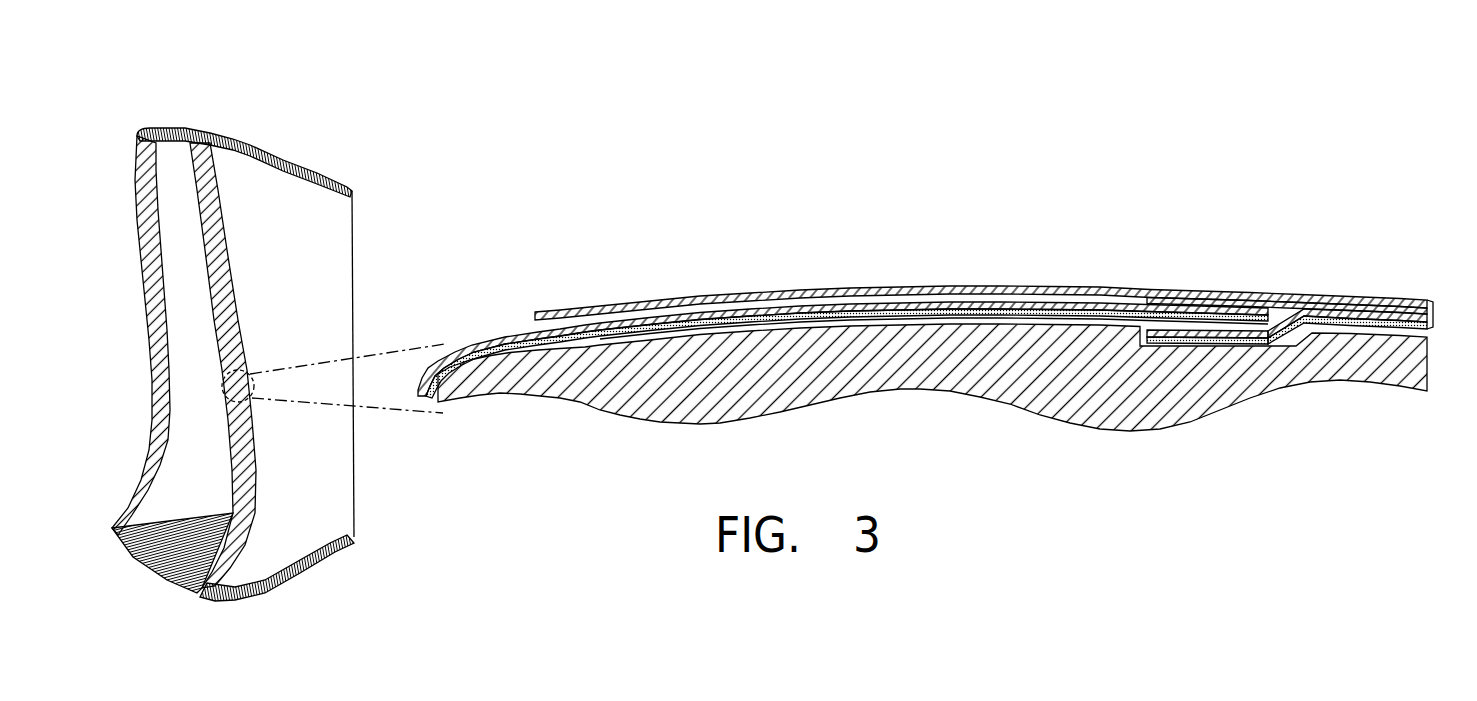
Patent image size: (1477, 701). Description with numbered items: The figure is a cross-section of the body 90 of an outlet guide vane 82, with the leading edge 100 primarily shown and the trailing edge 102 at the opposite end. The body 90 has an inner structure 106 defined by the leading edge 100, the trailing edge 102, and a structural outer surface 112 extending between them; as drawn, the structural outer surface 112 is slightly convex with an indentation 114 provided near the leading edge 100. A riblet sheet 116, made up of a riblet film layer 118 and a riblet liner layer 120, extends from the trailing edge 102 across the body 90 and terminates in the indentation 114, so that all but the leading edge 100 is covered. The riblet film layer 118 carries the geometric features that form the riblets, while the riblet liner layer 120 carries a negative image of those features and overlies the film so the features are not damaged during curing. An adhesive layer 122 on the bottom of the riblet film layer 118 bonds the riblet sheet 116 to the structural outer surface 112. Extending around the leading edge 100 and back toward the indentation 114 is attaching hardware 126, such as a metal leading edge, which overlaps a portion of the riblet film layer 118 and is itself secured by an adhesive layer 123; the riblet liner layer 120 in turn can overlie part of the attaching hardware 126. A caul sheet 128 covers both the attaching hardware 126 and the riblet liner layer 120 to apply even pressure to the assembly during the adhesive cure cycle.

The outlet guide vane 82 is at (206, 116).
The body 90 is at (940, 184).
The leading edge 100 is at (921, 361).
The trailing edge 102 is at (1433, 312).
The inner structure 106 is at (1393, 355).
The structural outer surface 112 is at (632, 340).
The indentation 114 is at (1217, 350).
The riblet sheet 116 is at (1277, 269).
The riblet film layer 118 is at (1285, 322).
The riblet liner layer 120 is at (1190, 300).
The adhesive layer 122 is at (1300, 330).
The adhesive layer 123 is at (585, 330).
The attaching hardware 126 is at (725, 314).
The caul sheet 128 is at (843, 289).